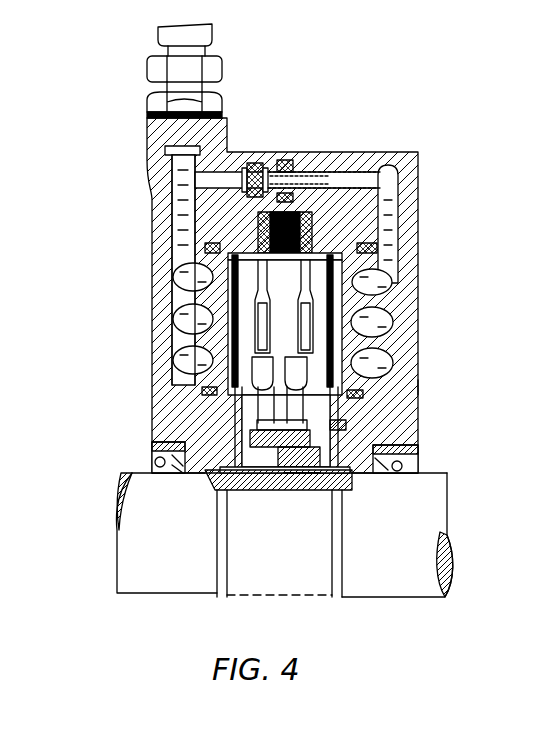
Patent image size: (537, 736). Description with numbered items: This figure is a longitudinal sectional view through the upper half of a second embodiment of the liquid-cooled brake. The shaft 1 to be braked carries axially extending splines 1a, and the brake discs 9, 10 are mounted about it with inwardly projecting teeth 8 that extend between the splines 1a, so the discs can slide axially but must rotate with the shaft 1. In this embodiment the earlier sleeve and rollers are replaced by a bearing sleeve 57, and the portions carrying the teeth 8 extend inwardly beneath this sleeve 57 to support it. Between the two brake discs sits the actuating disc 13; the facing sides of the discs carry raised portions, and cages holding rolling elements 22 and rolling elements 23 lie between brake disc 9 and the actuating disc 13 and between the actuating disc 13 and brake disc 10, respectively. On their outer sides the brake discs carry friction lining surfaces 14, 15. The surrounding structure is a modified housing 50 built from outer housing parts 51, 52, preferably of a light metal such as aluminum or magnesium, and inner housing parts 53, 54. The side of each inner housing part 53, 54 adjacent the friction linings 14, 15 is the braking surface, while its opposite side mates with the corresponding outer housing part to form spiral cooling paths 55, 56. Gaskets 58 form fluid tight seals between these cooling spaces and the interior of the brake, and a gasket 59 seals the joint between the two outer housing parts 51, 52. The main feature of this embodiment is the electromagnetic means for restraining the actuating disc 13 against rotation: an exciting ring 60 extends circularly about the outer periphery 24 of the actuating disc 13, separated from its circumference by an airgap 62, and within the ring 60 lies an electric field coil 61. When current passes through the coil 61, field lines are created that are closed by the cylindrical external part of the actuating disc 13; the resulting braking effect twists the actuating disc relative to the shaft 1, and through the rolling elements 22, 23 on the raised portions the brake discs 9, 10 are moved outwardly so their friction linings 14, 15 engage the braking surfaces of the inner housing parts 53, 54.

The shaft 1 is at (147, 537).
The splines 1a is at (300, 482).
The teeth 8 is at (255, 495).
The brake disc 9 is at (160, 441).
The brake disc 10 is at (345, 447).
The actuating disc 13 is at (250, 436).
The friction lining surface 14 is at (256, 403).
The friction lining surface 15 is at (350, 406).
The rolling elements 22 is at (268, 417).
The rolling elements 23 is at (376, 262).
The outer periphery 24 is at (320, 262).
The housing 50 is at (147, 176).
The outer housing part 51 is at (168, 205).
The outer housing part 52 is at (410, 172).
The inner housing part 53 is at (226, 378).
The inner housing part 54 is at (420, 385).
The spiral cooling path 55 is at (203, 360).
The spiral cooling path 56 is at (372, 363).
The bearing sleeve 57 is at (348, 427).
The gaskets 58 is at (210, 246).
The gasket 59 is at (288, 158).
The exciting ring 60 is at (262, 163).
The electric field coil 61 is at (304, 165).
The airgap 62 is at (232, 257).